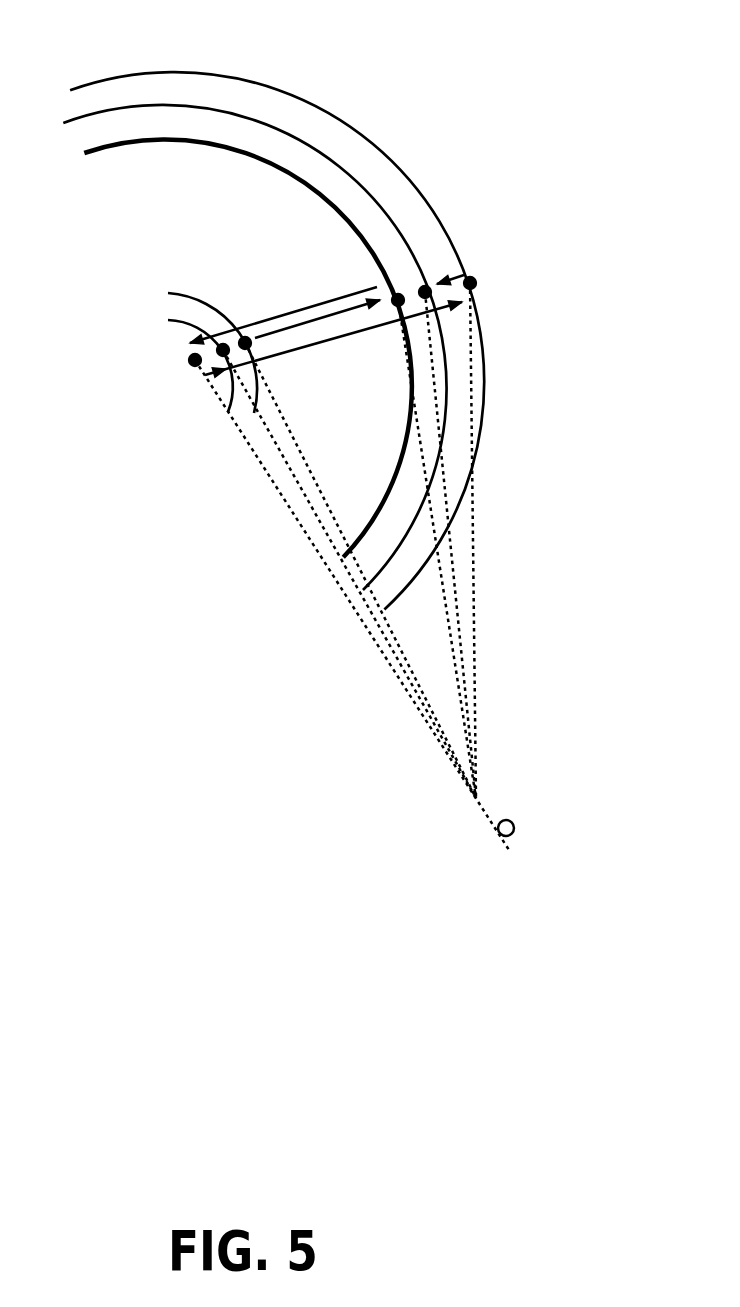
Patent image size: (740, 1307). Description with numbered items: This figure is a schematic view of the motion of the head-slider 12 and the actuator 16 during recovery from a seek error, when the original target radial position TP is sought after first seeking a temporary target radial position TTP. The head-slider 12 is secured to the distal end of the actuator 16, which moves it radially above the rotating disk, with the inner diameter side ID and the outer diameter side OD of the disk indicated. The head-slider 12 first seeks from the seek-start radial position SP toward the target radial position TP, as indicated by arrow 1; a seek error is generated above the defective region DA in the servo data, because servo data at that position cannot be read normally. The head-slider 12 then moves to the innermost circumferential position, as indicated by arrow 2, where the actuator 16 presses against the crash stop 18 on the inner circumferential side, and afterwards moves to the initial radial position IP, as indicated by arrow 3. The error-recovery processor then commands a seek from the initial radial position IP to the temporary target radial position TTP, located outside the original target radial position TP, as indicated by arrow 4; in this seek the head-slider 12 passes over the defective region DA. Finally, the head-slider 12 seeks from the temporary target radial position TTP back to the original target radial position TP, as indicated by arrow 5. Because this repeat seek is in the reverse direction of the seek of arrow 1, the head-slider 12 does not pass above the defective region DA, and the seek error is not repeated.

The head-slider 12 is at (187, 363).
The actuator 16 is at (289, 511).
The crash stop on the inner circumferential side 18 is at (510, 821).
The temporary target radial position TTP is at (216, 73).
The target radial position TP is at (292, 130).
The defective region DA is at (217, 147).
The seek-start radial position SP is at (178, 293).
The initial radial position IP is at (183, 320).
The inner diameter side ID is at (127, 505).
The outer diameter side OD is at (534, 505).
The arrow [1] 1 is at (294, 340).
The arrow [2] 2 is at (317, 312).
The arrow [3] 3 is at (203, 385).
The arrow [4] 4 is at (333, 338).
The arrow [5] 5 is at (444, 270).